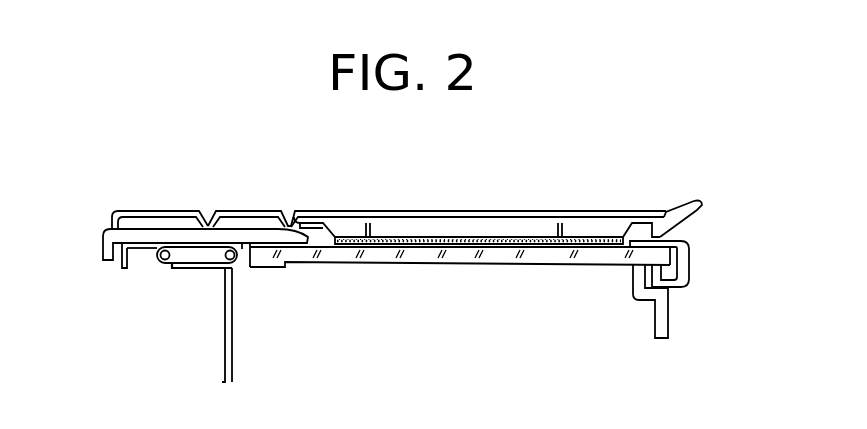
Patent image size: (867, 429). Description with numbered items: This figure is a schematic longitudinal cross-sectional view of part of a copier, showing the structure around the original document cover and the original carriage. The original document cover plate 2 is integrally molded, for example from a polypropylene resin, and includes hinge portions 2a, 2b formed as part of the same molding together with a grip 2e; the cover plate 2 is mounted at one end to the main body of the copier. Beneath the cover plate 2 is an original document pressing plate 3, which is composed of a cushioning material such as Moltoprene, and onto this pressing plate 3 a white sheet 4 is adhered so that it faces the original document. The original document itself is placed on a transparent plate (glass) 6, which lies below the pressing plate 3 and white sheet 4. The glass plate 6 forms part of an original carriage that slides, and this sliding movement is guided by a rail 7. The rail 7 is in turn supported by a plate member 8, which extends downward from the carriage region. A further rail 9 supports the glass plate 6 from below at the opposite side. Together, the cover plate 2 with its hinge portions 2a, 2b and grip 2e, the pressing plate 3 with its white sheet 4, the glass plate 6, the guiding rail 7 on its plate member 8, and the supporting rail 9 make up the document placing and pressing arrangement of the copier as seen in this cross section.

The original document cover plate 2 is at (393, 217).
The hinge portion 2a is at (209, 224).
The hinge portion 2b is at (287, 224).
The grip 2e is at (679, 212).
The original document pressing plate 3 is at (508, 238).
The white sheet 4 is at (447, 224).
The transparent plate (glass) 6 is at (499, 263).
The rail 7 is at (180, 268).
The plate member 8 is at (233, 318).
The rail 9 is at (637, 292).